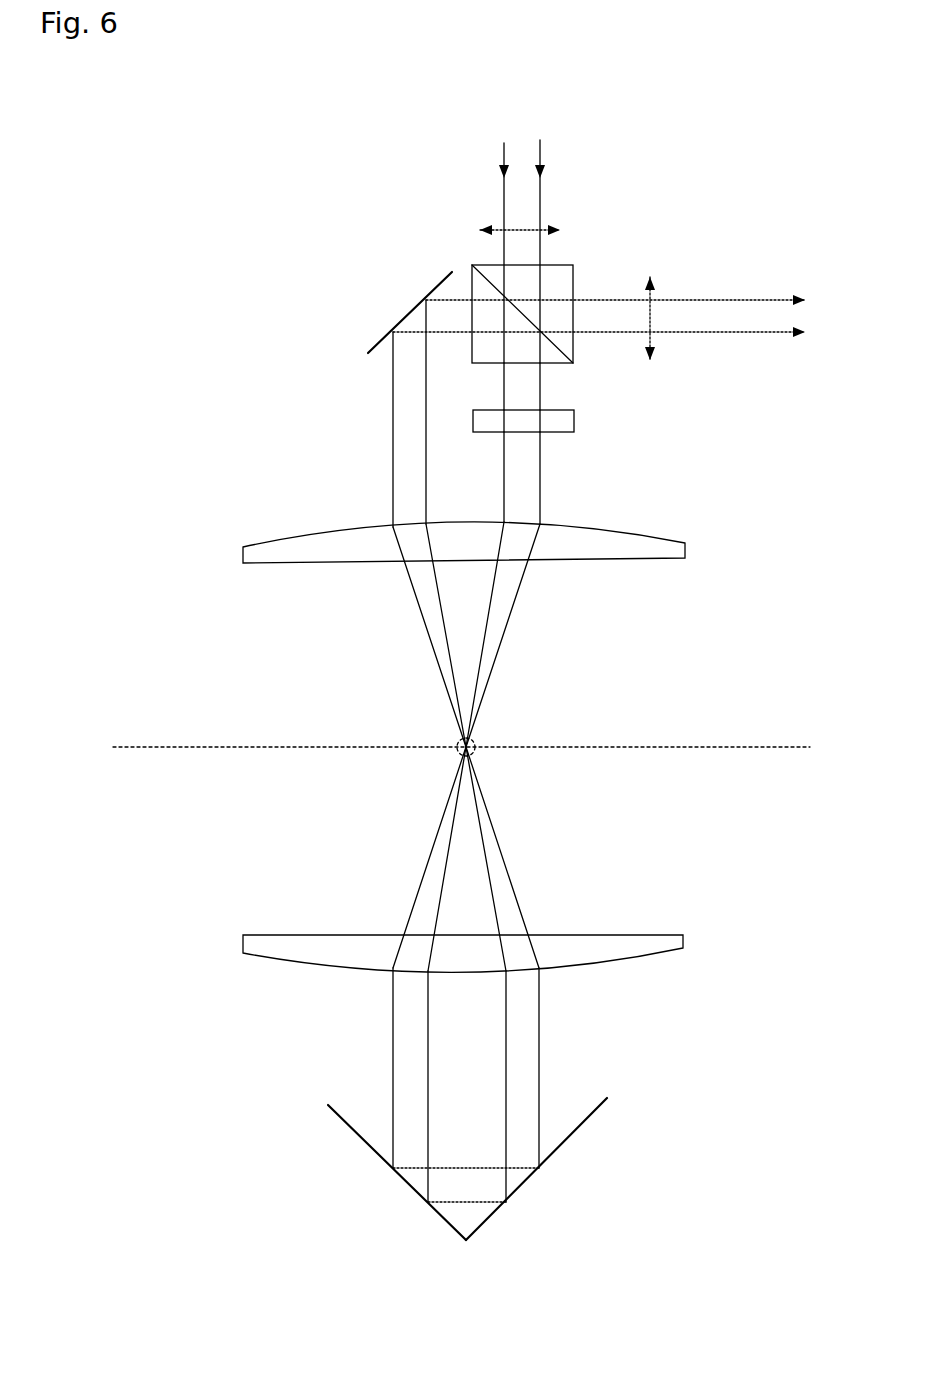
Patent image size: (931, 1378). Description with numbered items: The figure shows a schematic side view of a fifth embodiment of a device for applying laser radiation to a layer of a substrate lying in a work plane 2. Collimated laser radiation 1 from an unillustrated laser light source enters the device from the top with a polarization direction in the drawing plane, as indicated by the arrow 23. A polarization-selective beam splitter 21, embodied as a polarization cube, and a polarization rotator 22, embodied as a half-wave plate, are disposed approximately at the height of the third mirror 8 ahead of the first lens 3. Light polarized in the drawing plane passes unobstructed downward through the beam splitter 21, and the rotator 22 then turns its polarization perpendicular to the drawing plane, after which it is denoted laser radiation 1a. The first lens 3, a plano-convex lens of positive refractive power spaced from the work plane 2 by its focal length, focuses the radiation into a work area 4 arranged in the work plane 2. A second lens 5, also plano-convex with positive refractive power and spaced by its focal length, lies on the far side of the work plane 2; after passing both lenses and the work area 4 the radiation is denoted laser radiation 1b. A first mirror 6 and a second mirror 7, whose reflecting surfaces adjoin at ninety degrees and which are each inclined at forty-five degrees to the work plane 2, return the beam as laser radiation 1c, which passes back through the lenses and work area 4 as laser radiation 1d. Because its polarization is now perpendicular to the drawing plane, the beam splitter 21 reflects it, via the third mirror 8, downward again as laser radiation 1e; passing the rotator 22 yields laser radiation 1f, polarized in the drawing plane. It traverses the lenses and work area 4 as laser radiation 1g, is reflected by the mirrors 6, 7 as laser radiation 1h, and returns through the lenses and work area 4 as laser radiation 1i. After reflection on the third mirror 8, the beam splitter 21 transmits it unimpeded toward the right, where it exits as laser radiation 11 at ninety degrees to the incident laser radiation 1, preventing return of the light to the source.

The laser radiation 1 is at (523, 202).
The laser radiation 1a is at (602, 589).
The laser radiation 1b is at (389, 974).
The laser radiation 1c is at (584, 974).
The laser radiation 1d is at (347, 523).
The laser radiation 1e is at (524, 387).
The laser radiation 1f is at (520, 490).
The laser radiation 1g is at (410, 1065).
The laser radiation 1h is at (523, 1053).
The laser radiation 1i is at (407, 438).
The work plane 2 is at (722, 747).
The first lens 3 is at (662, 550).
The work area 4 is at (477, 742).
The second lens 5 is at (668, 943).
The first mirror 6 is at (573, 1133).
The second mirror 7 is at (368, 1145).
The third mirror 8 is at (383, 338).
The laser radiation 11 is at (724, 318).
The polarization-selective beam splitter 21 is at (493, 275).
The polarization rotator 22 is at (558, 420).
The arrow 23 is at (652, 273).